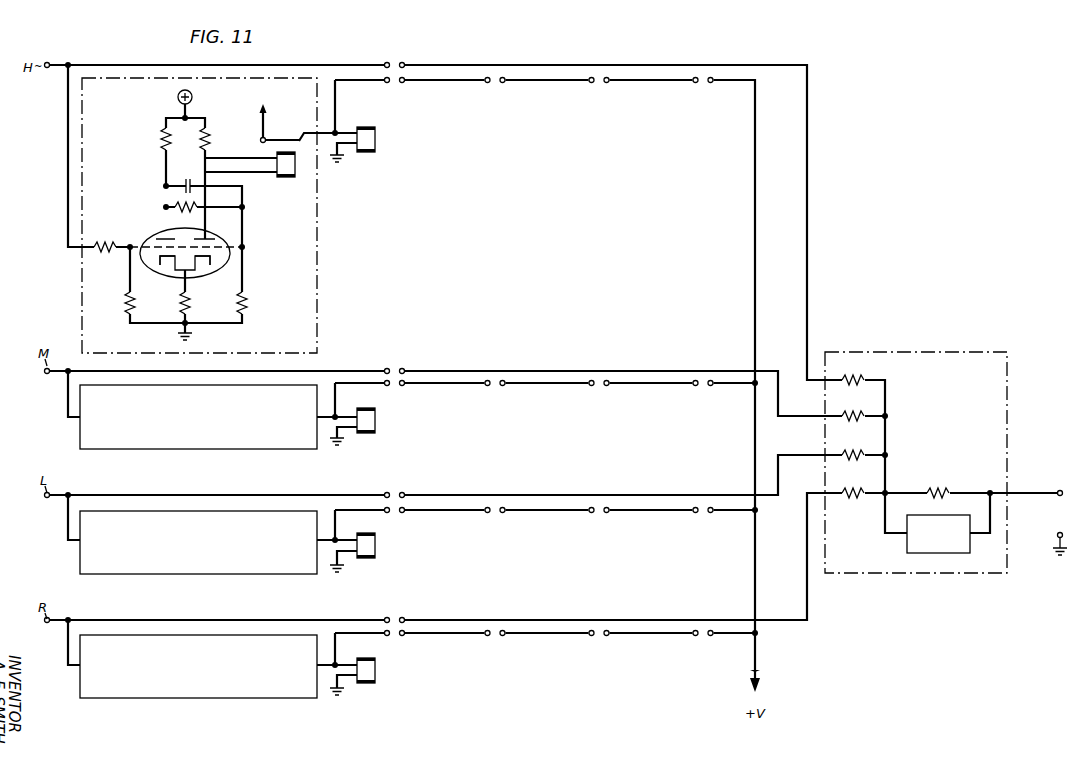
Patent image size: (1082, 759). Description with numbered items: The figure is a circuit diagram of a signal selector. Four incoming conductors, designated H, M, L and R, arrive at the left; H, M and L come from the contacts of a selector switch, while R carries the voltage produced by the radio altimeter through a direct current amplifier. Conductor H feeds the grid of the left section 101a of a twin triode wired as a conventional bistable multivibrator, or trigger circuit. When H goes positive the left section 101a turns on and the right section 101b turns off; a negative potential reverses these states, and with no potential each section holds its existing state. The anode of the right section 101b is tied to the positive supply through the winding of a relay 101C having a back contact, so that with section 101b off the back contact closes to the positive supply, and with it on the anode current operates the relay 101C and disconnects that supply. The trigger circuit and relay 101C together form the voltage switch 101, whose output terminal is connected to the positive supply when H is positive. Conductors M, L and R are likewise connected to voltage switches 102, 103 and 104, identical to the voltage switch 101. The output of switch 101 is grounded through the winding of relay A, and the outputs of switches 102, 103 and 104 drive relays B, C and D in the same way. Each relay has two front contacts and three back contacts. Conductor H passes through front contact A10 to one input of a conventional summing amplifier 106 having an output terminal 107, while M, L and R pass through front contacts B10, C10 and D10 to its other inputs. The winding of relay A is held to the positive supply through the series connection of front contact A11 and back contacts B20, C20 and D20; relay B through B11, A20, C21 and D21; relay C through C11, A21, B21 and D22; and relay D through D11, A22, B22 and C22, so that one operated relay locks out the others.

The voltage switch 101 is at (223, 209).
The left section of twin triode 101a is at (163, 270).
The right section of twin triode 101b is at (215, 267).
The relay with back contact 101C is at (284, 178).
The voltage switch 102 is at (231, 422).
The voltage switch 103 is at (229, 546).
The voltage switch 104 is at (229, 671).
The summing amplifier 106 is at (918, 576).
The output terminal 107 is at (1060, 487).
The relay A is at (365, 152).
The relay B is at (372, 432).
The relay C is at (372, 556).
The relay D is at (372, 680).
The front contact of relay A A10 is at (399, 55).
The front contact of relay A A11 is at (398, 93).
The back contact of relay A A20 is at (495, 396).
The back contact of relay A A21 is at (495, 522).
The back contact of relay A A22 is at (495, 646).
The front contact of relay B B10 is at (399, 360).
The front contact of relay B B11 is at (400, 396).
The back contact of relay B B20 is at (495, 93).
The back contact of relay B B21 is at (600, 522).
The back contact of relay B B22 is at (600, 646).
The front contact of relay C C10 is at (398, 484).
The front contact of relay C C11 is at (398, 522).
The back contact of relay C C20 is at (597, 93).
The back contact of relay C C21 is at (599, 396).
The back contact of relay C C22 is at (705, 646).
The front contact of relay D D10 is at (399, 609).
The front contact of relay D D11 is at (399, 646).
The back contact of relay D D20 is at (701, 93).
The back contact of relay D D21 is at (703, 396).
The back contact of relay D D22 is at (705, 522).